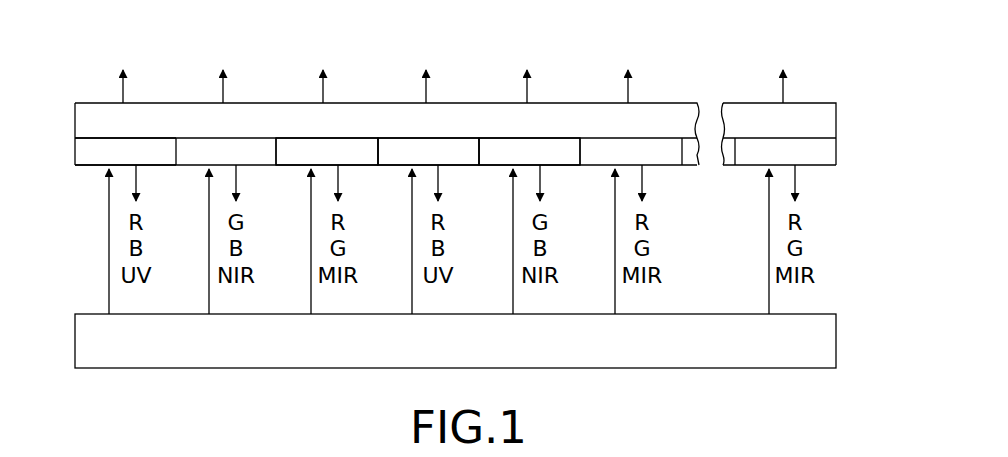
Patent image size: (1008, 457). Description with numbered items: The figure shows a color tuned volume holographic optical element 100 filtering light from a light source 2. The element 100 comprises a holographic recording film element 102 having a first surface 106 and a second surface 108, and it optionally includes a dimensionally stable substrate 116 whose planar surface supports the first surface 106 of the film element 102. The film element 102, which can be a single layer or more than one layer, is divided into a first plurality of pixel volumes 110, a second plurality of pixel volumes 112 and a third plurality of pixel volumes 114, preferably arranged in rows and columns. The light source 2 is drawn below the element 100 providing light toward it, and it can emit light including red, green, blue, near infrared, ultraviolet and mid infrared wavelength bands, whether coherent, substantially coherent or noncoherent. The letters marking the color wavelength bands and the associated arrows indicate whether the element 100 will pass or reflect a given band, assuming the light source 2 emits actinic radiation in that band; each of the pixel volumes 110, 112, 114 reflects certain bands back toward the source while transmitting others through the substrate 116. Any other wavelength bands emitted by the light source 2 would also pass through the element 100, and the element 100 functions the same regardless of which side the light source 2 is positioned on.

The color tuned volume holographic optical element 100 is at (813, 63).
The holographic recording film element 102 is at (842, 152).
The first surface 106 is at (103, 137).
The second surface 108 is at (95, 167).
The first plurality of pixel volumes 110 is at (538, 134).
The second plurality of pixel volumes 112 is at (439, 134).
The third plurality of pixel volumes 114 is at (331, 131).
The dimensionally stable substrate 116 is at (836, 125).
The light source 2 is at (836, 334).